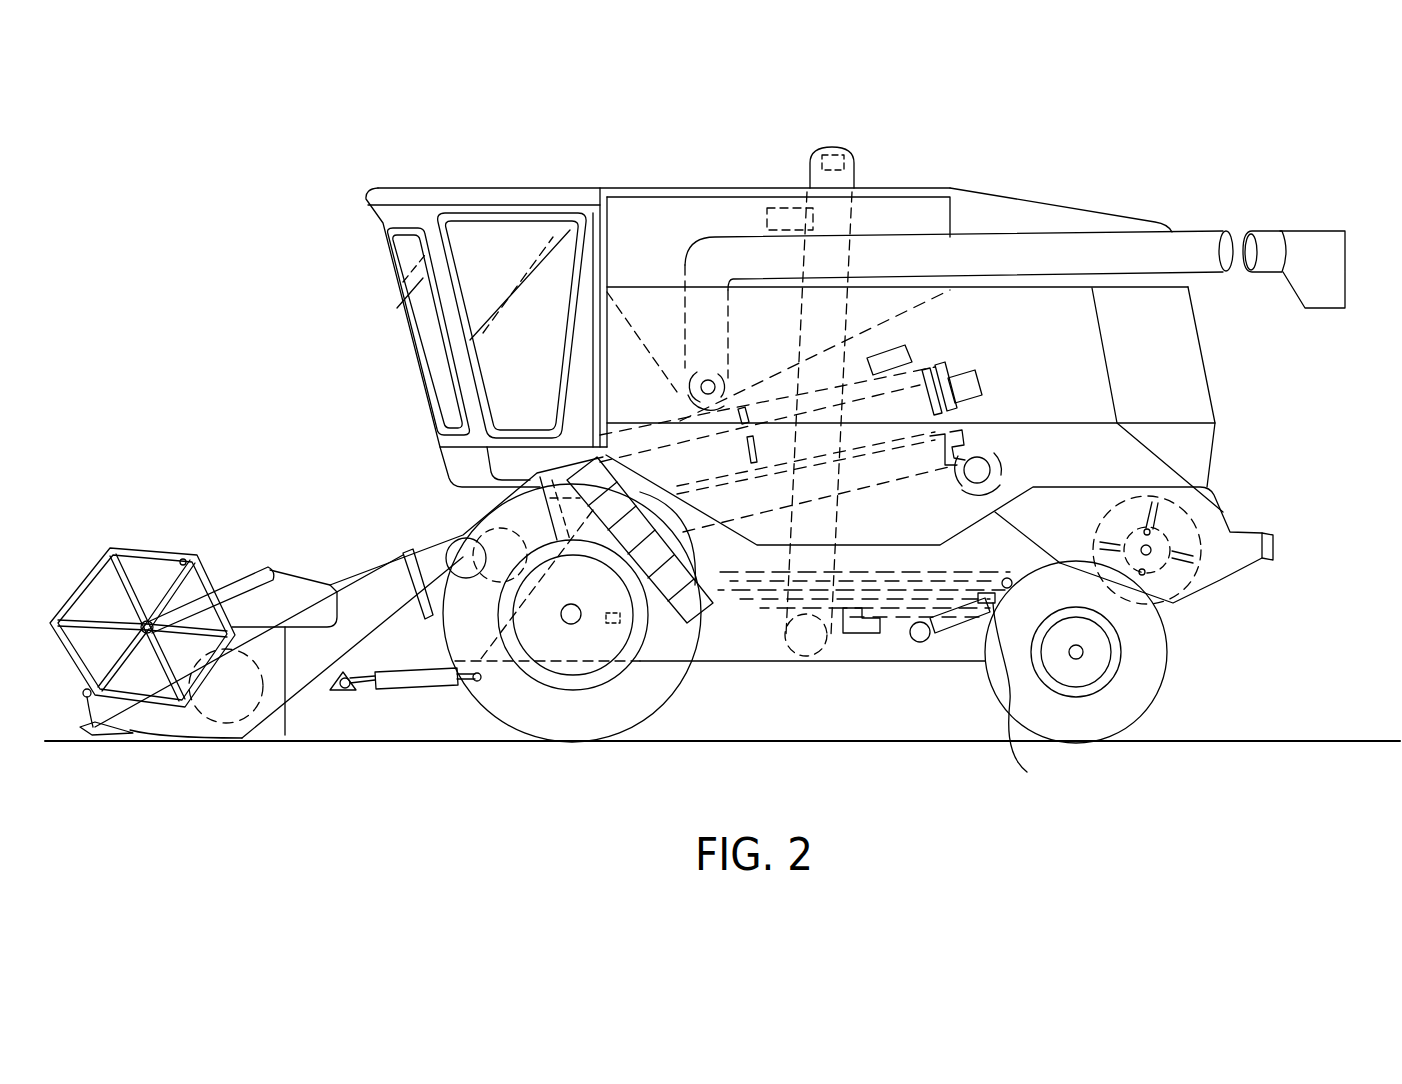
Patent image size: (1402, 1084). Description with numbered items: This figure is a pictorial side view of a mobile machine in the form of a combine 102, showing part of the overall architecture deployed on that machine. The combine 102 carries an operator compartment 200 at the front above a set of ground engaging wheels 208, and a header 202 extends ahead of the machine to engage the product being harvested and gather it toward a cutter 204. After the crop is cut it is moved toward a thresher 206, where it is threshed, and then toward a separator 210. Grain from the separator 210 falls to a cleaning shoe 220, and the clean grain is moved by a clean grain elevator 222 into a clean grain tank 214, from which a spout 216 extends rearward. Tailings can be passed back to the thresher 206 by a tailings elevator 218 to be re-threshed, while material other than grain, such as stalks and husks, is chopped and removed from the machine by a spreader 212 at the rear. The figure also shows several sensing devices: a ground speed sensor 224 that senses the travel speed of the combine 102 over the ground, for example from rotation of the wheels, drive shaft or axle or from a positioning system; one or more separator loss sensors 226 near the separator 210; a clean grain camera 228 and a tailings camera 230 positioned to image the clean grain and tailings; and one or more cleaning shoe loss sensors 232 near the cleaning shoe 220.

The combine 102 is at (474, 172).
The operator compartment 200 is at (410, 337).
The header 202 is at (160, 552).
The cutter 204 is at (208, 740).
The thresher 206 is at (518, 478).
The ground engaging wheels 208 is at (530, 732).
The separator 210 is at (989, 371).
The spreader 212 is at (1222, 515).
The clean grain tank 214 is at (653, 175).
The spout 216 is at (1193, 231).
The tailings elevator 218 is at (693, 605).
The cleaning shoe 220 is at (876, 666).
The clean grain elevator 222 is at (860, 227).
The ground speed sensor 224 is at (612, 625).
The separator loss sensor 226 is at (930, 434).
The clean grain camera 228 is at (795, 203).
The tailings camera 230 is at (910, 350).
The cleaning shoe loss sensor 232 is at (1033, 691).